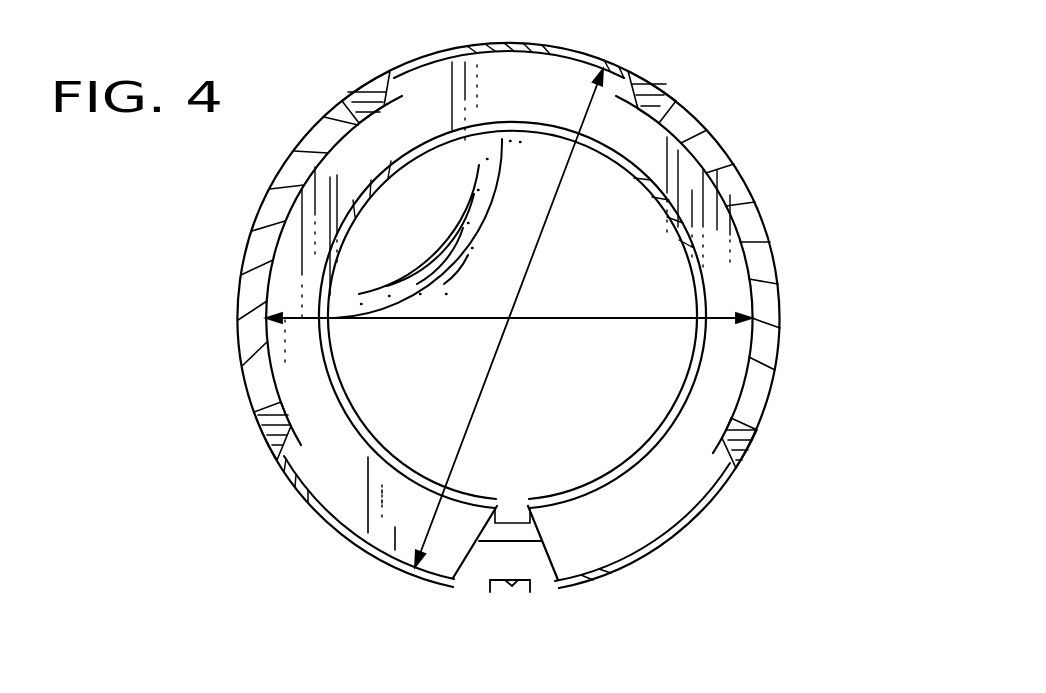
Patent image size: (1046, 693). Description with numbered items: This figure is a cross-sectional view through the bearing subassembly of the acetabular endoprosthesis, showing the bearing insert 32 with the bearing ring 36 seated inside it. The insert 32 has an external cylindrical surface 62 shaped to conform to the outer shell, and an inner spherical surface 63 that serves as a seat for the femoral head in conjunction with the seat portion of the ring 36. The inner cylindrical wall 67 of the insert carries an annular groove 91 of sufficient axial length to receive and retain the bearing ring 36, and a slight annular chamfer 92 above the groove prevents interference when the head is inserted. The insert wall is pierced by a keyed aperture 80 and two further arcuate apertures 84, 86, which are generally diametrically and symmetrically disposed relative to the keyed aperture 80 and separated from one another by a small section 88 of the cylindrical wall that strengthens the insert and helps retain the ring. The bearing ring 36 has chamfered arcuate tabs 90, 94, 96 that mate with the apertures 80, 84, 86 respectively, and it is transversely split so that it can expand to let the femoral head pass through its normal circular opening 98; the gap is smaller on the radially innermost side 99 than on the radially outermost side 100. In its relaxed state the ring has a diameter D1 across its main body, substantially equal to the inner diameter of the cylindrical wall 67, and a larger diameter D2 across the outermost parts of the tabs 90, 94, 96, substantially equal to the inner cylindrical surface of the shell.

The bearing insert 32 is at (757, 230).
The cylindrical surface 62 is at (268, 188).
The inner cylindrical wall 67 is at (744, 370).
The keyed tab 90 is at (548, 67).
The keyed aperture 80 is at (642, 90).
The arcuate aperture 86 is at (748, 458).
The arcuate aperture 84 is at (274, 434).
The tab 94 is at (338, 480).
The radially outermost side 100 is at (360, 547).
The tab 96 is at (645, 520).
The circular opening 98 is at (684, 253).
The radially innermost side 99 is at (393, 457).
The inner spherical surface 63 is at (393, 342).
The bearing ring 36 is at (677, 463).
The annular groove 91 is at (503, 574).
The annular chamfer 92 is at (507, 530).
The small section 88 is at (520, 583).
The diameter D1 is at (540, 320).
The diameter D2 is at (546, 224).